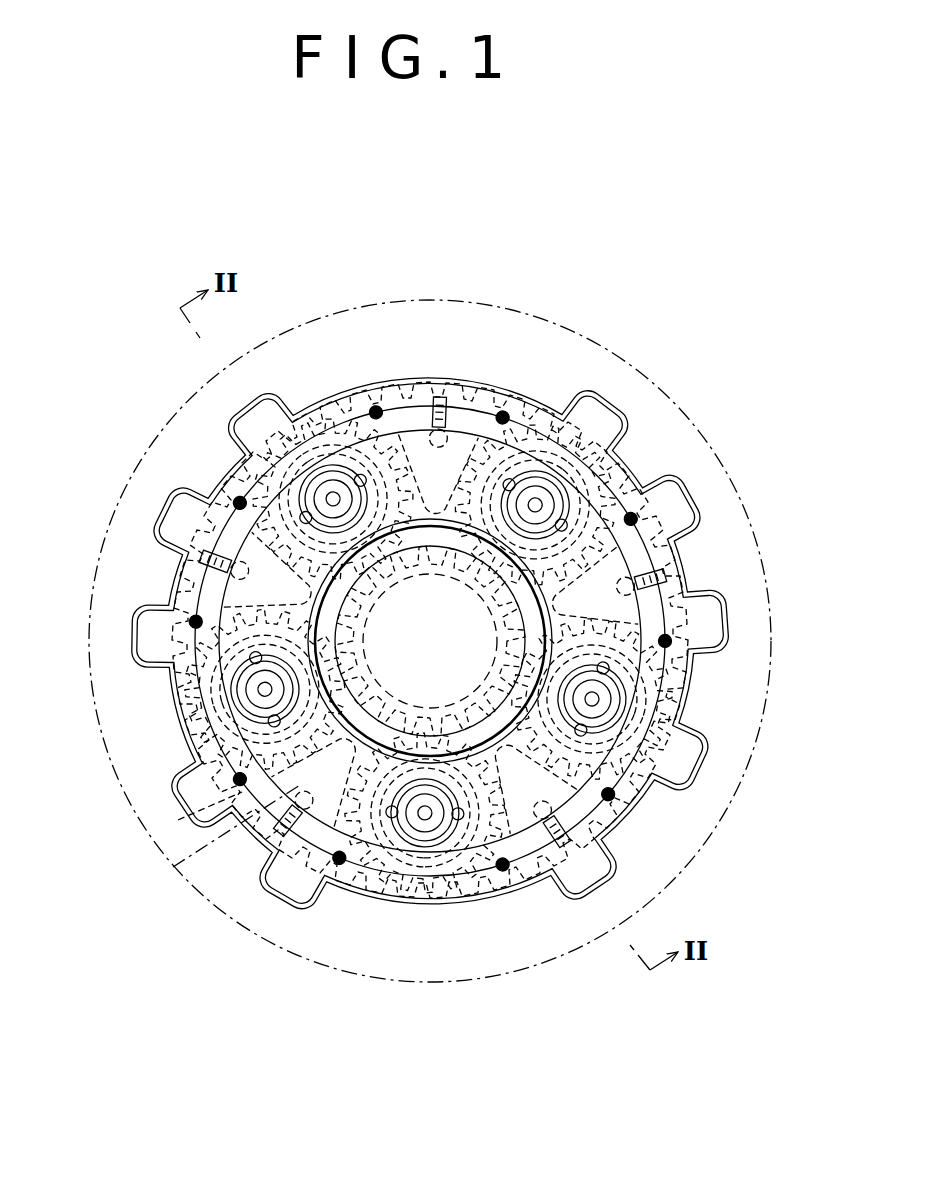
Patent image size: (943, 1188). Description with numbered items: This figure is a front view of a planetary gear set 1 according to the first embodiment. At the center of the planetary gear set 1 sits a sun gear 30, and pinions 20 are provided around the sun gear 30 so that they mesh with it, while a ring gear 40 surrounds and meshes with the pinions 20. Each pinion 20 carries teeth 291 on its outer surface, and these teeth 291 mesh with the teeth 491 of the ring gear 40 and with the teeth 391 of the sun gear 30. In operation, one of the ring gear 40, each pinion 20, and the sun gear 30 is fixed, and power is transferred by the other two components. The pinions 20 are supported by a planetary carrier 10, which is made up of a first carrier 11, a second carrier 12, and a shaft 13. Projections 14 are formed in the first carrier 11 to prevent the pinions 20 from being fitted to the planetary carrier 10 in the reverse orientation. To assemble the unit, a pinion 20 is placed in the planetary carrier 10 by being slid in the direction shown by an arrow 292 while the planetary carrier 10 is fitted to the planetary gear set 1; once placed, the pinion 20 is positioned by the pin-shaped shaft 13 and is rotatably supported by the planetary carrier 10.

The planetary gear set 1 is at (714, 281).
The planetary carrier 10 is at (252, 247).
The first carrier 11 is at (287, 452).
The second carrier 12 is at (355, 400).
The shaft 13 is at (333, 478).
The projections 14 is at (378, 412).
The pinions 20 is at (261, 398).
The sun gear 30 is at (178, 820).
The ring gear 40 is at (703, 428).
The teeth 291 is at (583, 440).
The arrow 292 is at (780, 722).
The teeth 391 is at (173, 867).
The teeth 491 is at (692, 492).